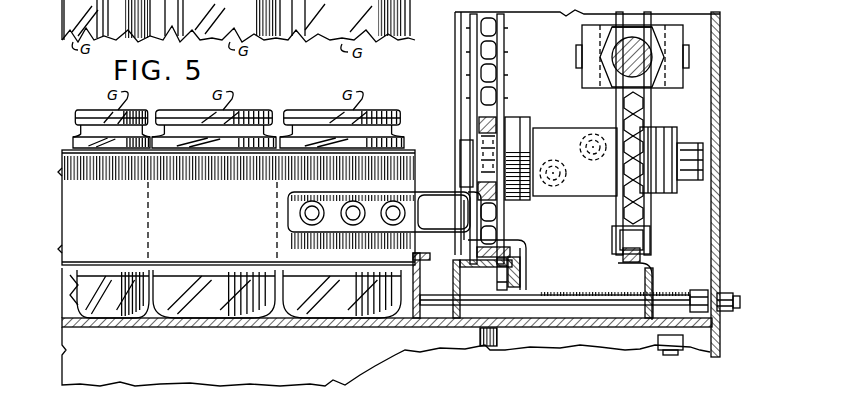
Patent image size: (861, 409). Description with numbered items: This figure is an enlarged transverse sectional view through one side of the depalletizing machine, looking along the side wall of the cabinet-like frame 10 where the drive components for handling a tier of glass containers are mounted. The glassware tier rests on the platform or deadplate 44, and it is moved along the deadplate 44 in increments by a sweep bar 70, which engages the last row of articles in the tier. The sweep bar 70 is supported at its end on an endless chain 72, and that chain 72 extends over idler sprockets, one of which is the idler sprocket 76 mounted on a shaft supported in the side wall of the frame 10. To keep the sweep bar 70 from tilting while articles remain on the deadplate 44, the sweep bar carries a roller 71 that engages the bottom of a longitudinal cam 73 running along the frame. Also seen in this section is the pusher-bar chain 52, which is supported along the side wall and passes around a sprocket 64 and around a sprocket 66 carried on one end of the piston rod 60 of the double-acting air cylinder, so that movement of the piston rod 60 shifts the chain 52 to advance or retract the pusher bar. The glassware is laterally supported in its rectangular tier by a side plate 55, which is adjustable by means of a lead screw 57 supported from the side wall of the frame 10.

The frame 10 is at (730, 136).
The deadplate 44 is at (208, 328).
The chain 52 is at (614, 98).
The side plate 55 is at (462, 285).
The lead screw 57 is at (740, 304).
The piston rod 60 is at (640, 53).
The sprocket 64 is at (637, 124).
The sprocket 66 is at (622, 22).
The sweep bar 70 is at (220, 236).
The roller 71 is at (503, 267).
The chain 72 is at (487, 75).
The longitudinal cam 73 is at (507, 248).
The idler sprocket 76 is at (490, 128).